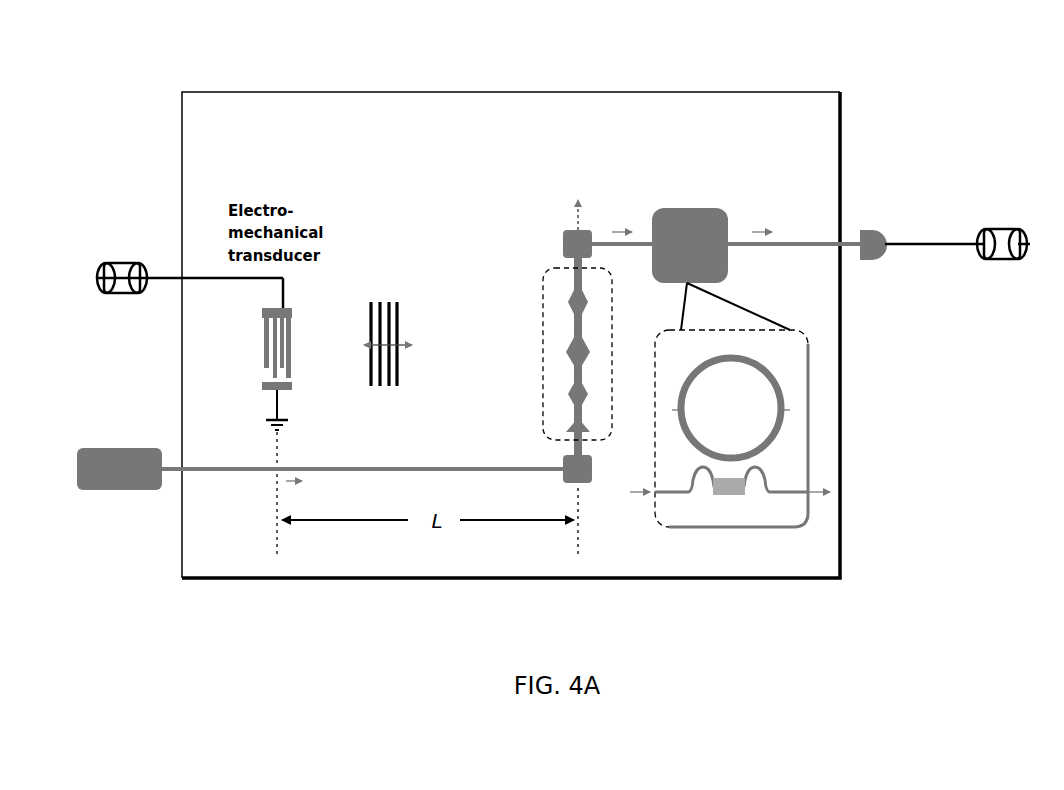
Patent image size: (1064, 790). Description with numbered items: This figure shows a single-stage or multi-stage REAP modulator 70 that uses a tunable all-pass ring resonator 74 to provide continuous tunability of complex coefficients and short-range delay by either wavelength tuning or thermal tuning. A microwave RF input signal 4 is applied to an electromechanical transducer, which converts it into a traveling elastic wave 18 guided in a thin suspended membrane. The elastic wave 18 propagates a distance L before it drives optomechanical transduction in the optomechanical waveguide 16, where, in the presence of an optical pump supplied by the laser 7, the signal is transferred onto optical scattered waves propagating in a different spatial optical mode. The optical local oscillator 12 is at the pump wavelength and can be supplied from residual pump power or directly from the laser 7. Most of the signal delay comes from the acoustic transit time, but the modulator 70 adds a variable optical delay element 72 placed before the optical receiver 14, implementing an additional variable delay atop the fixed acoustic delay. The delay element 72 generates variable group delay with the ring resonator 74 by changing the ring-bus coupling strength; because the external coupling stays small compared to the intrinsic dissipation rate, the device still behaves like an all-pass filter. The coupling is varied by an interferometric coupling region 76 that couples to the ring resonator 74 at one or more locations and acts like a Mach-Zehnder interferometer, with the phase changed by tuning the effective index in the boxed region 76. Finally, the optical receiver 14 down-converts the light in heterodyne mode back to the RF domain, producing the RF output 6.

The REAP modulator 70 is at (317, 82).
The RF input signal 4 is at (187, 258).
The elastic wave 18 is at (405, 378).
The laser 7 is at (130, 494).
The optical local oscillator 12 is at (576, 236).
The optomechanical waveguide 16 is at (537, 272).
The variable optical delay element 72 is at (665, 196).
The ring resonator 74 is at (790, 388).
The interferometric coupling region 76 is at (753, 497).
The optical receiver 14 is at (895, 209).
The RF output 6 is at (959, 219).